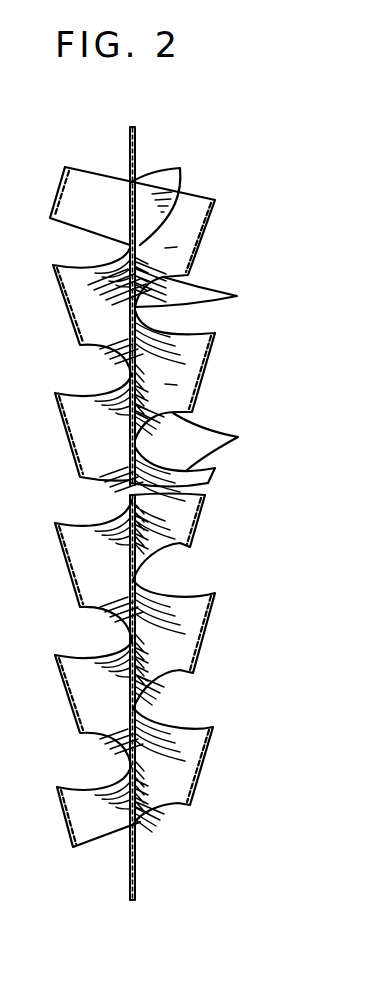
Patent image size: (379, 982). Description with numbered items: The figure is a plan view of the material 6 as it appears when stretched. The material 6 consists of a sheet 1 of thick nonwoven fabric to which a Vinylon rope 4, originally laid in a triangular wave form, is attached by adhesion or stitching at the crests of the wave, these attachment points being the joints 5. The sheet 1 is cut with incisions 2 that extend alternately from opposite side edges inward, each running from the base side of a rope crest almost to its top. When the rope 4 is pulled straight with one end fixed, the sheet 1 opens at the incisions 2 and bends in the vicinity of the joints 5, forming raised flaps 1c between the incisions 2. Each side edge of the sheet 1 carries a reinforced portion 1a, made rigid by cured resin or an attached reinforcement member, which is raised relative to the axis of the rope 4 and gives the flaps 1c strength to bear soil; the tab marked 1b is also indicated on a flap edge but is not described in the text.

The sheet 1 is at (83, 178).
The reinforced portion 1a is at (215, 212).
The tongue tab 1b is at (258, 297).
The raised flap 1c is at (177, 247).
The incision 2 is at (250, 432).
The rope 4 is at (135, 132).
The joint 5 is at (137, 183).
The material 6 is at (248, 167).